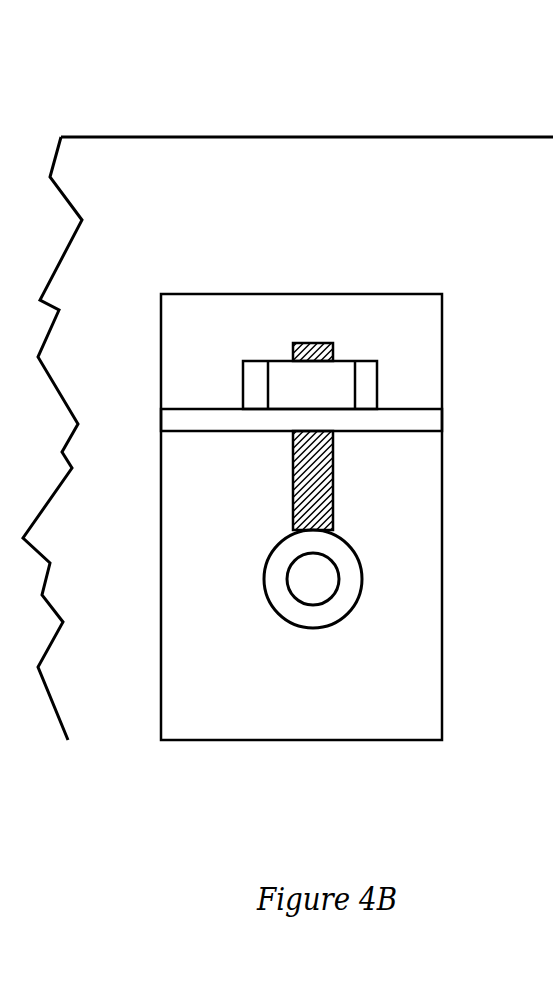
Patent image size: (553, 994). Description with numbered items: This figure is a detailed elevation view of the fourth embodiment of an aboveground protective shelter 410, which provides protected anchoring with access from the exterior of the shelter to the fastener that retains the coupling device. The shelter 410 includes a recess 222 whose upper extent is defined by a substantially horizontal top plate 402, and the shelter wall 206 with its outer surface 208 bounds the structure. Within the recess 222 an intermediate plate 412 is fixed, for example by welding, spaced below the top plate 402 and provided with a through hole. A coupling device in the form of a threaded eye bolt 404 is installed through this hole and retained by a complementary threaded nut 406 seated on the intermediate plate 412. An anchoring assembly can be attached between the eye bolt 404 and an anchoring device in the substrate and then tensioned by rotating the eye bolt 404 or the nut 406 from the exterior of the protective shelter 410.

The panel 206 is at (253, 163).
The panel surface 208 is at (320, 137).
The protective shelter 410 is at (438, 98).
The top plate 402 is at (228, 294).
The intermediate plate 412 is at (430, 425).
The threaded nut 406 is at (343, 358).
The threaded eye bolt 404 is at (312, 628).
The recess 222 is at (404, 606).